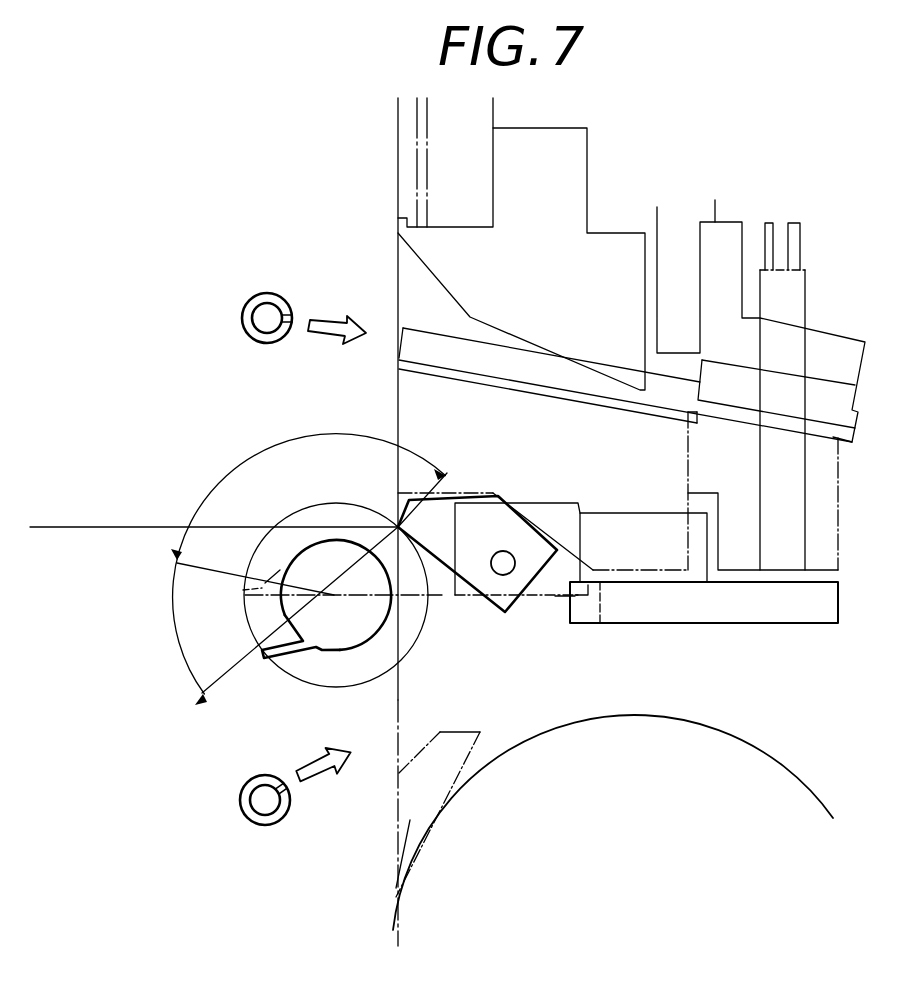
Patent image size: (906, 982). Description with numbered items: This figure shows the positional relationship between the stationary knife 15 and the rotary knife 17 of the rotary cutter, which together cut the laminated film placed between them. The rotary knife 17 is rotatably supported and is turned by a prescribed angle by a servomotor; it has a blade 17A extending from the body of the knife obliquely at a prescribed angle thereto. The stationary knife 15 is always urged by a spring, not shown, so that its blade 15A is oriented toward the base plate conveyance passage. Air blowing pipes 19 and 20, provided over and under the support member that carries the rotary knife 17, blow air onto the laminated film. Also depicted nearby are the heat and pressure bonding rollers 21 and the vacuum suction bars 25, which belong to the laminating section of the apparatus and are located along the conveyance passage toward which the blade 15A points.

The stationary knife 15 is at (500, 616).
The blade 15A is at (398, 527).
The rotary knife 17 is at (366, 643).
The blade 17A is at (247, 627).
The air blowing pipe 19 is at (245, 328).
The air blowing pipe 20 is at (248, 820).
The heat and pressure bonding rollers 21 is at (740, 740).
The vacuum suction bars 25 is at (410, 820).